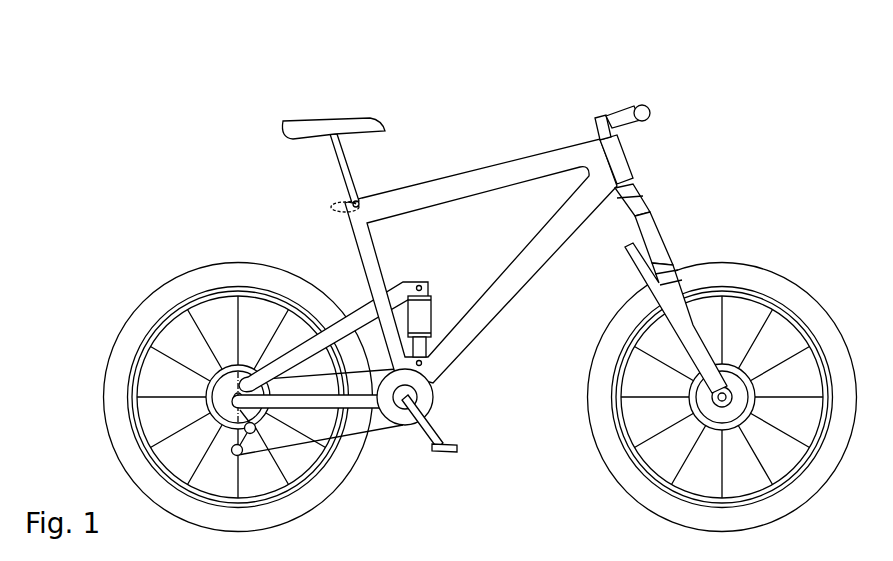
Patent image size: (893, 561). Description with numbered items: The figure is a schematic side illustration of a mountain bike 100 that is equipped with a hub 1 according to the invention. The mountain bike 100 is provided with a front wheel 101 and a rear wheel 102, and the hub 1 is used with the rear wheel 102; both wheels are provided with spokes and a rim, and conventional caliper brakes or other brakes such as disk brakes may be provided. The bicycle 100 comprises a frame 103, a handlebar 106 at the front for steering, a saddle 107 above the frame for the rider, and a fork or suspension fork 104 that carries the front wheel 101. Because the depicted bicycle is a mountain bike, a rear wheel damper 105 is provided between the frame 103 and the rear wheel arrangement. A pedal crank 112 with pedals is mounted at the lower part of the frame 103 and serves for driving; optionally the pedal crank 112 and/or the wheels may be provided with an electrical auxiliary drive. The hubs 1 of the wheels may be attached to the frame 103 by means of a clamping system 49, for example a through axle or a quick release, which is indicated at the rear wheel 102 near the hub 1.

The mountain bike 100 is at (187, 150).
The front wheel 101 is at (810, 262).
The rear wheel 102 is at (155, 270).
The frame 103 is at (510, 175).
The suspension fork 104 is at (668, 268).
The rear wheel damper 105 is at (425, 306).
The handlebar 106 is at (647, 106).
The saddle 107 is at (340, 117).
The pedal crank 112 is at (436, 476).
The hub 1 is at (196, 385).
The clamping system 49 is at (232, 447).